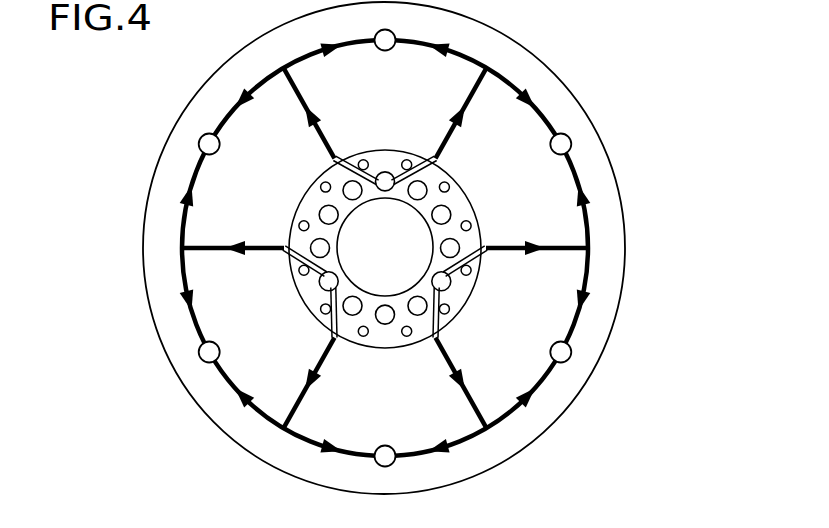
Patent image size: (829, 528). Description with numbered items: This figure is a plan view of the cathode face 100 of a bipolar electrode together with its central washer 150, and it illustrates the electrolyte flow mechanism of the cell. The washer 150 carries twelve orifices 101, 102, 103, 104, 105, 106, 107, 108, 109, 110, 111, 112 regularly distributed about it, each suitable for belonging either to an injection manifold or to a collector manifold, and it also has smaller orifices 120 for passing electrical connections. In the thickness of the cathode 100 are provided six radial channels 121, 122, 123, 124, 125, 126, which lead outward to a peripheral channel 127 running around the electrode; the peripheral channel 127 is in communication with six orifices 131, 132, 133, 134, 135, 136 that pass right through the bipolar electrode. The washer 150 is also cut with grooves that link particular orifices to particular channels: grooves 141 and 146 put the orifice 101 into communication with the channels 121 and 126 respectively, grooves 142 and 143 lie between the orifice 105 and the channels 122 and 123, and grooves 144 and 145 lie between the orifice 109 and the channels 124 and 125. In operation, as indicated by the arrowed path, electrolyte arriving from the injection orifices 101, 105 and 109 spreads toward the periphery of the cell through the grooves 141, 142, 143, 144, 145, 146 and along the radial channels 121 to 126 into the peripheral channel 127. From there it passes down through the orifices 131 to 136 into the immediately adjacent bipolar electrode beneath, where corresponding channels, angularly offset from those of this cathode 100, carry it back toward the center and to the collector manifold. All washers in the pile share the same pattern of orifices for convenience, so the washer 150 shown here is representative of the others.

The cathode face 100 is at (178, 115).
The peripheral channel 127 is at (468, 58).
The washer 150 is at (455, 168).
The radial channel 121 is at (477, 88).
The radial channel 122 is at (549, 250).
The radial channel 123 is at (472, 398).
The radial channel 124 is at (287, 420).
The radial channel 125 is at (228, 250).
The radial channel 126 is at (290, 88).
The groove 141 is at (421, 158).
The groove 142 is at (480, 256).
The groove 143 is at (442, 322).
The groove 144 is at (332, 328).
The groove 145 is at (289, 260).
The groove 146 is at (341, 157).
The orifice 131 is at (378, 33).
The orifice 132 is at (570, 137).
The orifice 133 is at (572, 352).
The orifice 134 is at (376, 464).
The orifice 135 is at (202, 360).
The orifice 136 is at (199, 142).
The orifice 101 is at (385, 171).
The orifice 102 is at (412, 197).
The orifice 103 is at (450, 214).
The orifice 104 is at (459, 247).
The orifice 105 is at (434, 275).
The orifice 106 is at (417, 315).
The orifice 107 is at (385, 324).
The orifice 108 is at (356, 297).
The orifice 109 is at (324, 289).
The orifice 110 is at (310, 246).
The orifice 111 is at (320, 211).
The orifice 112 is at (344, 186).
The orifice for electrical connections 120 is at (470, 278).